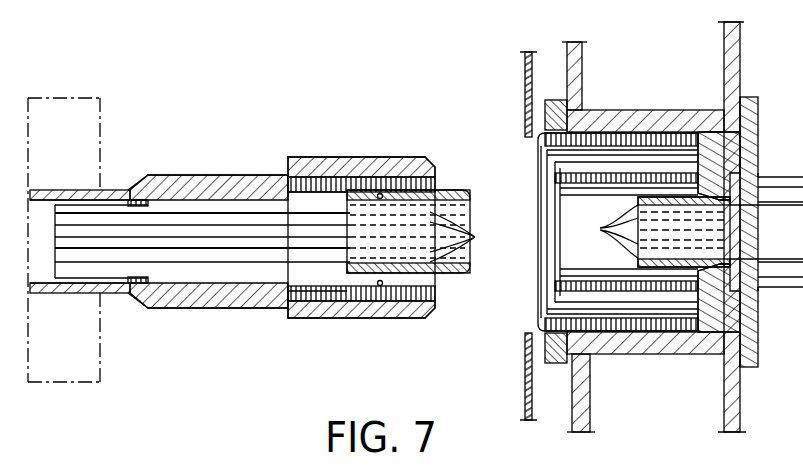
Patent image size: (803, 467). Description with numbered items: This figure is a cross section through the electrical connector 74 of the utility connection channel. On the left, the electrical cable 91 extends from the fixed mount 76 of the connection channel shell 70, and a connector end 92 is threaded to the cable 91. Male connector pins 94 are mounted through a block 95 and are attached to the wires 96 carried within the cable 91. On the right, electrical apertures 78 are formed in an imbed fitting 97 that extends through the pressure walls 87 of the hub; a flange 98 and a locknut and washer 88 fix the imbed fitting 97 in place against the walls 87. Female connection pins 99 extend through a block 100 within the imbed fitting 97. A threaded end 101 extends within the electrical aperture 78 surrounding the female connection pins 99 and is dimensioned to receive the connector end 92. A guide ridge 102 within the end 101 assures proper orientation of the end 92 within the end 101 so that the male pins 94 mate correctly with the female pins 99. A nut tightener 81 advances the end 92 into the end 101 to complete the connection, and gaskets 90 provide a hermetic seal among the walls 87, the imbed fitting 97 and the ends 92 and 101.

The channel housing 70 is at (528, 400).
The electrical connector 74 is at (245, 138).
The fixed mount 76 is at (100, 345).
The electrical aperture 78 is at (530, 146).
The nut tightener 81 is at (300, 166).
The pressure wall 87 is at (726, 387).
The locknut and washer 88 is at (557, 96).
The gaskets 90 is at (383, 160).
The electrical cable 91 is at (108, 190).
The connector end 92 is at (362, 175).
The male connector pins 94 is at (470, 237).
The block 95 is at (380, 286).
The wires 96 is at (253, 245).
The imbed fitting 97 is at (742, 152).
The flange 98 is at (750, 97).
The female connection pins 99 is at (630, 228).
The block 100 is at (600, 256).
The threaded end 101 is at (575, 290).
The guide ridge 102 is at (565, 162).